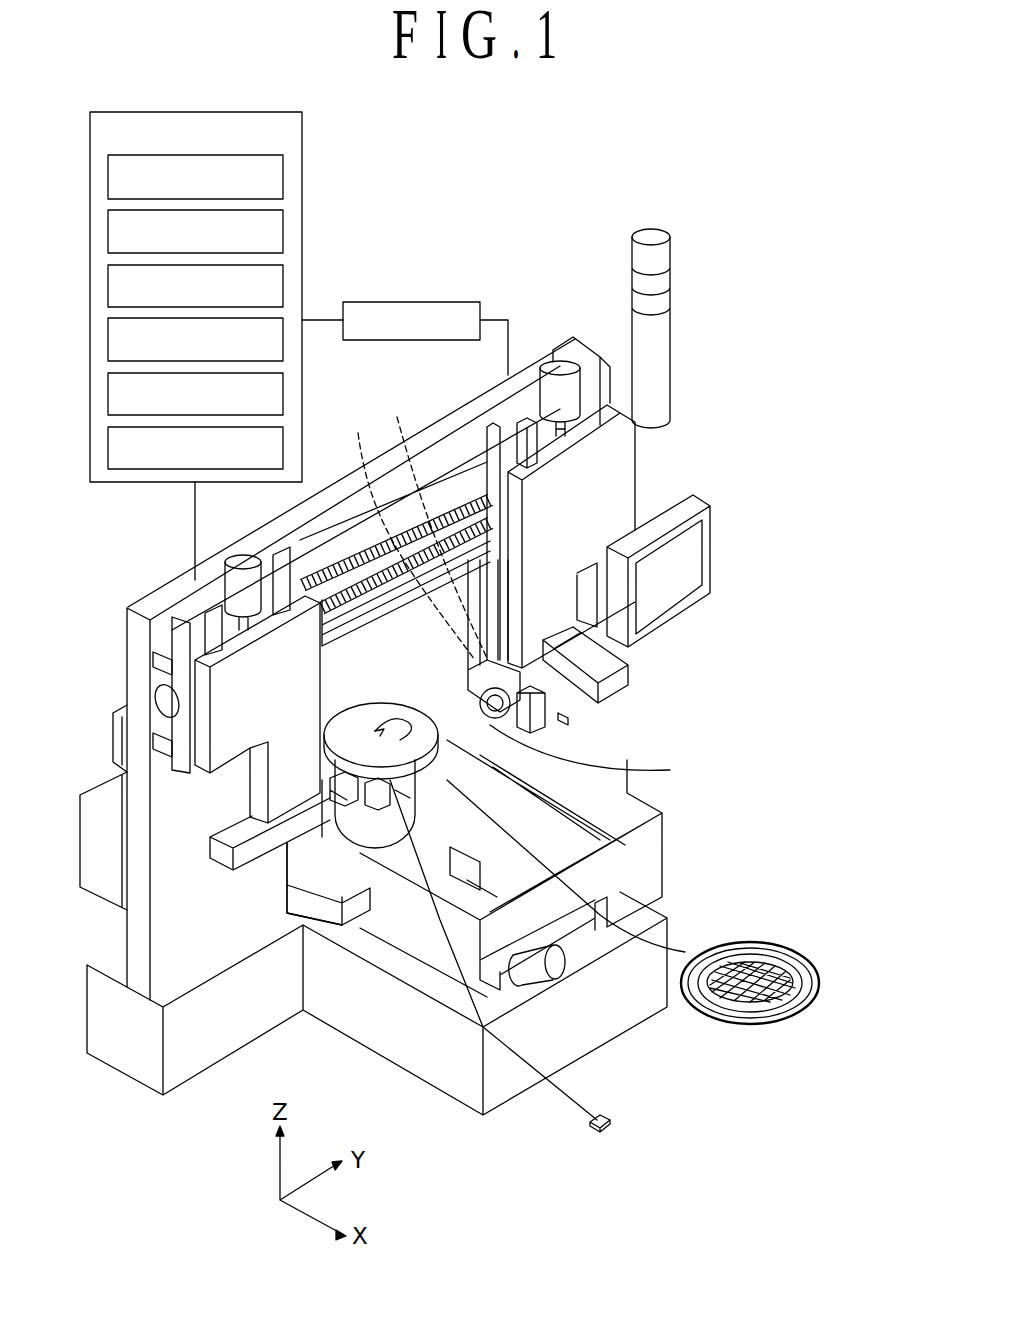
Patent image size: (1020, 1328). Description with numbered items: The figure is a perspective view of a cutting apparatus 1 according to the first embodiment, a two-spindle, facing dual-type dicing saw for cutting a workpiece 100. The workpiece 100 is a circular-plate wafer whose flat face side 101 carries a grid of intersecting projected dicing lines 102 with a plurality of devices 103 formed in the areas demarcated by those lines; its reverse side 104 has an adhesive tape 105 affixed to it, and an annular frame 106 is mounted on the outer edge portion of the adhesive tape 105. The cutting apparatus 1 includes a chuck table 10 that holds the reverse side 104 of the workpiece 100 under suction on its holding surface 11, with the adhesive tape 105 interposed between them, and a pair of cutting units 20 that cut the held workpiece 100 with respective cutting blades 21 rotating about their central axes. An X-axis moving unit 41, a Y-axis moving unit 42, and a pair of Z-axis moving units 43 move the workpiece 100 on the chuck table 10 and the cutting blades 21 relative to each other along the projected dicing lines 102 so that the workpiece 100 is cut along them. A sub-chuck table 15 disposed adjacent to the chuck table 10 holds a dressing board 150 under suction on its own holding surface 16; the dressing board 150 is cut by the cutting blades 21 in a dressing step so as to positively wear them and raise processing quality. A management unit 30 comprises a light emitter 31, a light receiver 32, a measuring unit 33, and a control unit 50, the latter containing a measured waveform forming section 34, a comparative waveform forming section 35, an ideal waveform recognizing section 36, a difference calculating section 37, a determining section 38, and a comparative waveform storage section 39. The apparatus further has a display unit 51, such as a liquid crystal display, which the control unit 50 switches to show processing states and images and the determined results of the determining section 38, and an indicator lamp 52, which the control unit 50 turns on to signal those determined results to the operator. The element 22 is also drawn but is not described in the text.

The cutting apparatus 1 is at (497, 262).
The chuck table 10 is at (395, 690).
The holding surface 11 is at (430, 705).
The sub-chuck table 15 is at (352, 832).
The holding surface 16 is at (397, 798).
The cutting unit 20 is at (545, 680).
The cutting blade 21 is at (548, 735).
The cutting blade 22 is at (595, 754).
The management unit 30 is at (328, 237).
The light emitter 31 is at (409, 533).
The light receiver 32 is at (436, 523).
The measuring unit 33 is at (412, 302).
The measured waveform forming section 34 is at (108, 188).
The comparative waveform forming section 35 is at (108, 244).
The ideal waveform recognizing section 36 is at (108, 292).
The difference calculating section 37 is at (108, 346).
The determining section 38 is at (108, 401).
The comparative waveform storage section 39 is at (108, 457).
The X-axis moving unit 41 is at (570, 972).
The Y-axis moving unit 42 is at (158, 703).
The Z-axis moving unit 43 is at (552, 362).
The control unit 50 is at (198, 111).
The display unit 51 is at (700, 547).
The indicator lamp 52 is at (668, 291).
The workpiece 100 is at (775, 960).
The face side 101 is at (788, 975).
The projected dicing line 102 is at (777, 1005).
The device 103 is at (758, 1008).
The reverse side 104 is at (795, 1005).
The adhesive tape 105 is at (800, 983).
The annular frame 106 is at (812, 989).
The dressing board 150 is at (608, 1120).